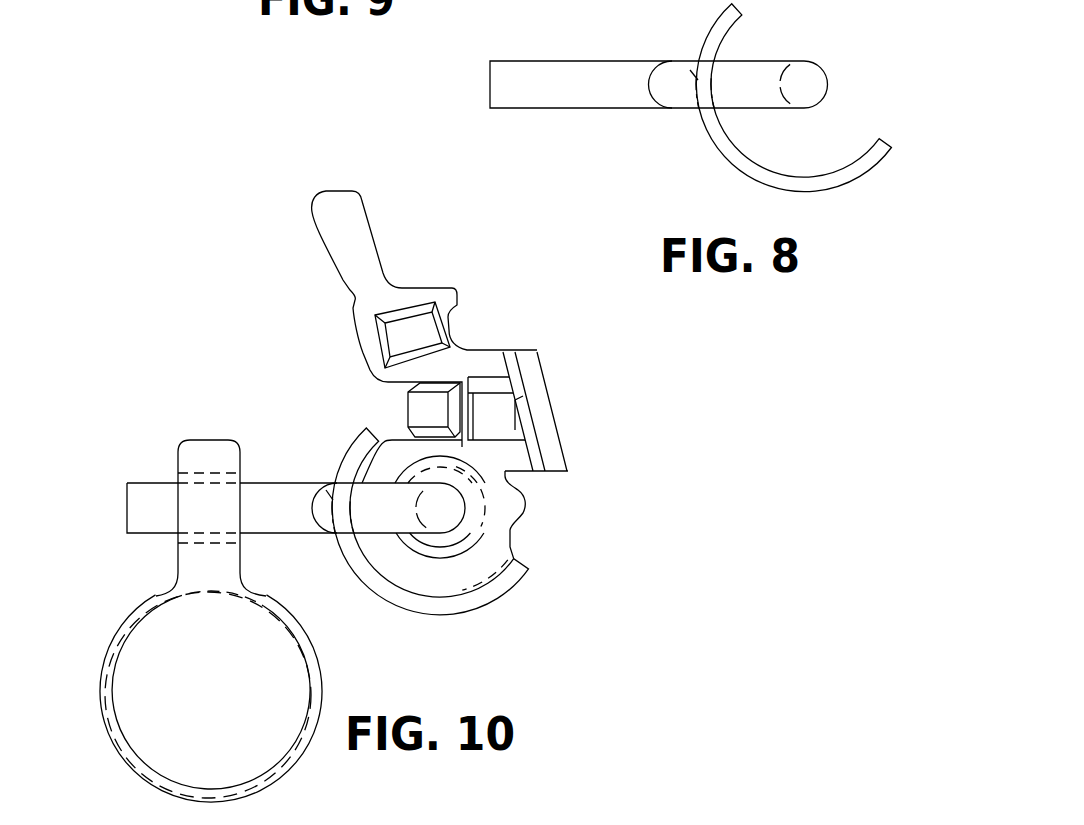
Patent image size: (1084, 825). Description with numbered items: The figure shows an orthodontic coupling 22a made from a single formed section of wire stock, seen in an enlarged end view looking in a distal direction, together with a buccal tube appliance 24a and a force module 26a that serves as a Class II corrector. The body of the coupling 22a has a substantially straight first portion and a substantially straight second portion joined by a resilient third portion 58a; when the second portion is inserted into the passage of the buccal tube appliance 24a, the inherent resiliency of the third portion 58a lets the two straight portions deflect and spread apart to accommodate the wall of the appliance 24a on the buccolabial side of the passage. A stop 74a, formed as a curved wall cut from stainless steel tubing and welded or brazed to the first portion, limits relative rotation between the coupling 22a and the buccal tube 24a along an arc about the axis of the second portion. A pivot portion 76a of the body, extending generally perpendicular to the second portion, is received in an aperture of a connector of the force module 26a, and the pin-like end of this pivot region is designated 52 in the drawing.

In FIG. 8, the orthodontic coupling 22a is at (667, 119).
In FIG. 10, the orthodontic coupling 22a is at (296, 485).
In FIG. 10, the buccal tube appliance 24a is at (528, 336).
In FIG. 10, the force module 26a is at (102, 647).
In FIG. 8, the pin 52 is at (842, 77).
In FIG. 8, the third portion 58a is at (753, 70).
In FIG. 10, the third portion 58a is at (382, 515).
In FIG. 8, the stop 74a is at (710, 40).
In FIG. 10, the stop 74a is at (438, 612).
In FIG. 8, the pivot portion 76a is at (622, 92).
In FIG. 10, the pivot portion 76a is at (268, 508).